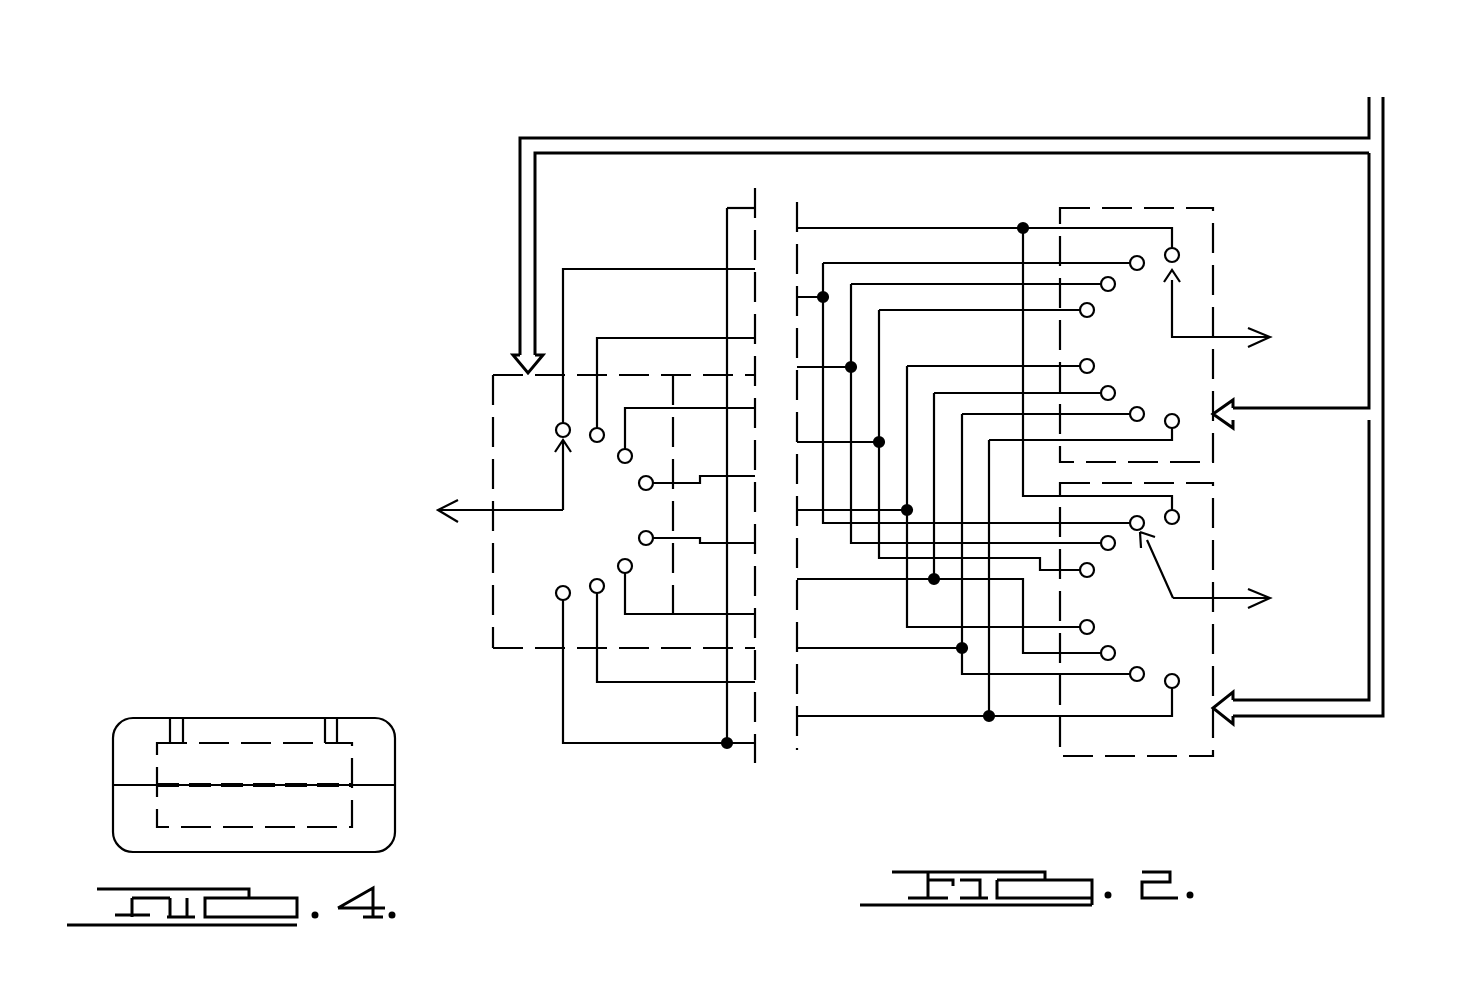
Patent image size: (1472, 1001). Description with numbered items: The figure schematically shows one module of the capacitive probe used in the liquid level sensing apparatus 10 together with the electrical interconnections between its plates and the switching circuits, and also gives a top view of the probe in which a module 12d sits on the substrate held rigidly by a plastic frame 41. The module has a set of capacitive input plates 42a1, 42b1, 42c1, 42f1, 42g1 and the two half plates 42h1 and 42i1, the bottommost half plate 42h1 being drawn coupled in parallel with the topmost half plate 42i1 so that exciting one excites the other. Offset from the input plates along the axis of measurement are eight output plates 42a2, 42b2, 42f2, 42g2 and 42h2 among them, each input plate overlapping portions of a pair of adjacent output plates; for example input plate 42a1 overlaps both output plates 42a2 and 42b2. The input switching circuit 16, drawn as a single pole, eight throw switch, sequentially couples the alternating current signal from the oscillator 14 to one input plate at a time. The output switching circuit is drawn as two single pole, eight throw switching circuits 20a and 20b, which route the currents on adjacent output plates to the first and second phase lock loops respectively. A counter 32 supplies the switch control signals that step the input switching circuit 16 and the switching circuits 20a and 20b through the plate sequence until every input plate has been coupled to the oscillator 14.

In FIG. 4, the liquid level sensing apparatus 10 is at (426, 755).
In FIG. 4, the module 12d is at (274, 720).
In FIG. 4, the plastic frame 41 is at (137, 733).
In FIG. 2, the oscillator 14 is at (476, 508).
In FIG. 2, the input switching circuit 16 is at (491, 385).
In FIG. 2, the switching circuit 20a is at (1215, 232).
In FIG. 2, the switching circuit 20b is at (1203, 758).
In FIG. 2, the counter 32 is at (978, 392).
In FIG. 2, the input plate 42i1 is at (755, 200).
In FIG. 2, the input plate 42a1 is at (755, 262).
In FIG. 2, the input plate 42b1 is at (755, 330).
In FIG. 2, the input plate 42c1 is at (755, 396).
In FIG. 2, the input plate 42f1 is at (755, 628).
In FIG. 2, the input plate 42g1 is at (755, 688).
In FIG. 2, the input plate 42h1 is at (755, 752).
In FIG. 2, the output plate 42a2 is at (797, 218).
In FIG. 2, the output plate 42b2 is at (797, 318).
In FIG. 2, the output plate 42f2 is at (797, 588).
In FIG. 2, the output plate 42g2 is at (797, 663).
In FIG. 2, the output plate 42h2 is at (797, 740).